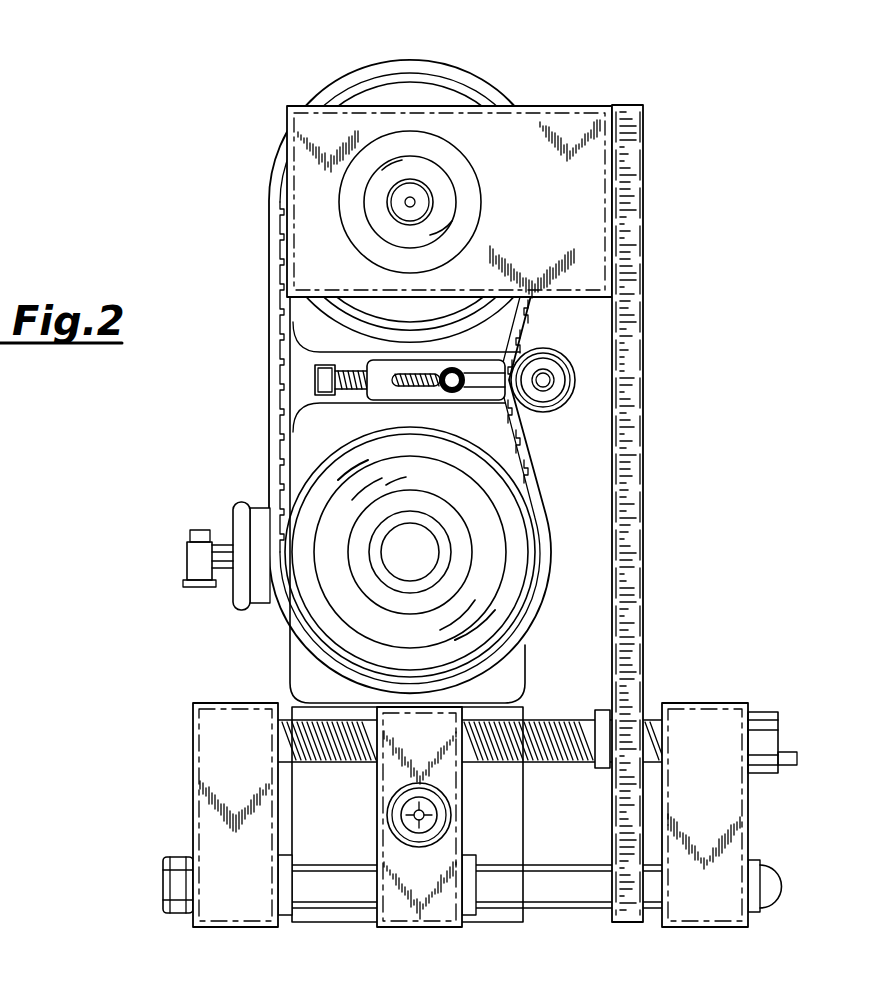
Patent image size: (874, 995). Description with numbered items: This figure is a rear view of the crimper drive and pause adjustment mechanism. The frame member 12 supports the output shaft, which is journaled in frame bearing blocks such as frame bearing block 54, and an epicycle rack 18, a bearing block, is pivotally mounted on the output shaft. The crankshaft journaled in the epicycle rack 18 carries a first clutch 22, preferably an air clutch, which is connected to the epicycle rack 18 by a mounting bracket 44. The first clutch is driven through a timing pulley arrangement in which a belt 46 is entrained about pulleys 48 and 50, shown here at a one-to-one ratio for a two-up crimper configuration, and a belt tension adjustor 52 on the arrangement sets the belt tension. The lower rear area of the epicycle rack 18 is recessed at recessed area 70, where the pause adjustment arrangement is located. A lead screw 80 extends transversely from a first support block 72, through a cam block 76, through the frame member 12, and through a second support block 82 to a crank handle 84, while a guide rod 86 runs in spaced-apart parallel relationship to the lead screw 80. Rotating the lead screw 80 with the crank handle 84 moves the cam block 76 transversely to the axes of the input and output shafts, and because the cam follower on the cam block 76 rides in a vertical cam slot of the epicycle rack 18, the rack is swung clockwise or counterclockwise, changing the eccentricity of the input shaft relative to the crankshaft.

The frame member 12 is at (643, 198).
The epicycle rack 18 is at (300, 650).
The first clutch 22 is at (515, 566).
The mounting bracket 44 is at (232, 520).
The belt 46 is at (512, 407).
The pulley 48 is at (286, 166).
The pulley 50 is at (546, 524).
The belt tension adjustor 52 is at (498, 363).
The frame bearing block 54 is at (298, 104).
The recessed area 70 is at (290, 701).
The first support block 72 is at (208, 738).
The cam block 76 is at (443, 778).
The lead screw 80 is at (539, 722).
The second support block 82 is at (690, 706).
The crank handle 84 is at (768, 712).
The guide rod 86 is at (518, 870).